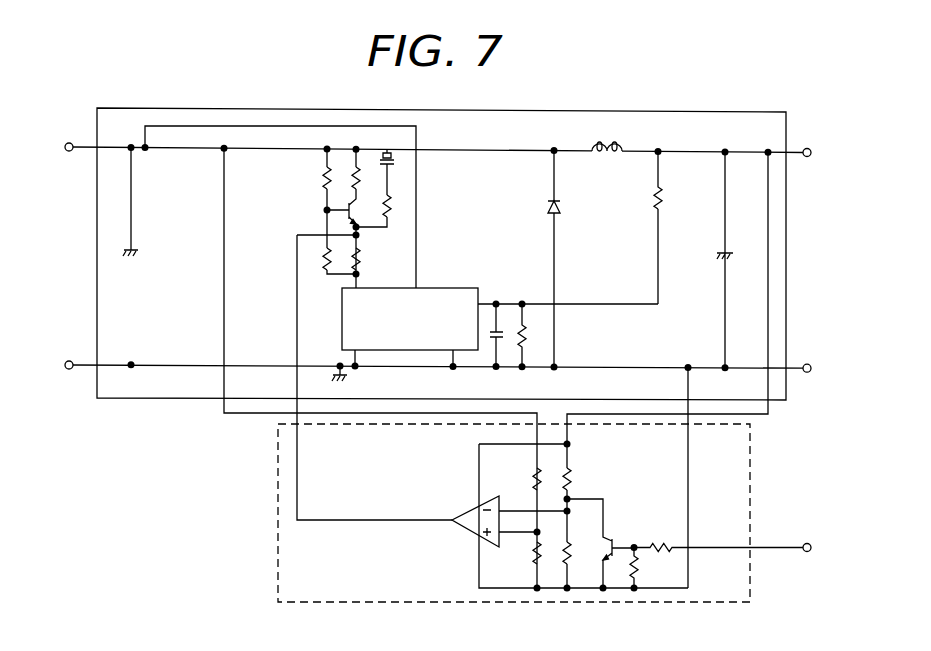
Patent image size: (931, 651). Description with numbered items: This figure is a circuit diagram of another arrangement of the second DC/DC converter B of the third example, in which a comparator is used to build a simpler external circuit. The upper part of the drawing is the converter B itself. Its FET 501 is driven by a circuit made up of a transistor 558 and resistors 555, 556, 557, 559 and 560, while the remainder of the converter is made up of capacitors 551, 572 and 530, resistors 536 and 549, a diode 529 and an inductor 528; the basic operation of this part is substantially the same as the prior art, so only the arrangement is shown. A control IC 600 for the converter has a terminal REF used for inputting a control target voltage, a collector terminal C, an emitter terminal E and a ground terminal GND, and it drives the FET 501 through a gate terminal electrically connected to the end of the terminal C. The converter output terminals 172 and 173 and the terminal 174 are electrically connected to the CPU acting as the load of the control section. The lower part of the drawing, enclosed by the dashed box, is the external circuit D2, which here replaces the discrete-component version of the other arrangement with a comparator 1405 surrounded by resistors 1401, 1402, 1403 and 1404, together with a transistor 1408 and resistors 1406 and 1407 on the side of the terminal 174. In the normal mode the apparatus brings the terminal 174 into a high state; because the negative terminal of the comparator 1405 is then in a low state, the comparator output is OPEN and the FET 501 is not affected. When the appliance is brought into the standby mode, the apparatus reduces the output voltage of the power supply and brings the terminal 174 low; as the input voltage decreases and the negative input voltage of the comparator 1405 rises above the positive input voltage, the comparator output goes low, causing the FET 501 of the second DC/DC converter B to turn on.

The second DC/DC converter B is at (165, 108).
The external circuit D2 is at (277, 572).
The FET 501 is at (392, 148).
The inductor 528 is at (607, 142).
The diode 529 is at (561, 207).
The capacitor 530 is at (716, 252).
The resistor 536 is at (662, 195).
The resistor 549 is at (528, 337).
The capacitor 551 is at (501, 328).
The resistor 555 is at (362, 179).
The resistor 556 is at (360, 209).
The resistor 557 is at (362, 261).
The transistor 558 is at (390, 218).
The resistor 559 is at (322, 181).
The resistor 560 is at (322, 256).
The capacitor 572 is at (122, 250).
The control IC 600 is at (341, 317).
The terminal 172 is at (808, 158).
The terminal 173 is at (808, 373).
The terminal 174 is at (808, 552).
The resistor 1401 is at (571, 478).
The resistor 1402 is at (575, 565).
The resistor 1403 is at (532, 470).
The resistor 1404 is at (532, 558).
The comparator 1405 is at (470, 507).
The resistor 1406 is at (662, 544).
The resistor 1407 is at (642, 566).
The transistor 1408 is at (612, 541).